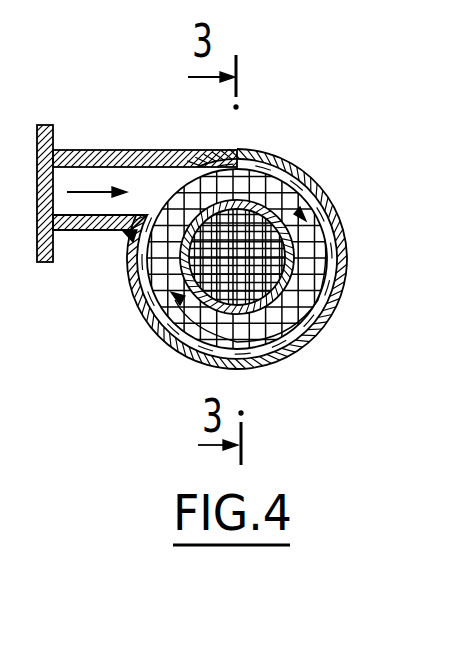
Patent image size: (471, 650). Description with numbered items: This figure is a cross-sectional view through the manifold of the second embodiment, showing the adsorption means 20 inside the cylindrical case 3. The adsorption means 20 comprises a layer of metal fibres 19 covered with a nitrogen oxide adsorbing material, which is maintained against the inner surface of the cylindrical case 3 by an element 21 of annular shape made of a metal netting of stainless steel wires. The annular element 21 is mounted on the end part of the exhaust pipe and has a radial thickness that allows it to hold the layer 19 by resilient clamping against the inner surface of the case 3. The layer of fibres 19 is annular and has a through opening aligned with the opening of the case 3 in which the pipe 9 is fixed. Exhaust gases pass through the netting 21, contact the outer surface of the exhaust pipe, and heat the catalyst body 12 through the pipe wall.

The cylindrical case 3 is at (308, 180).
The pipe 9 is at (88, 228).
The catalyst body 12 is at (299, 257).
The layer of metal fibres 19 is at (342, 282).
The adsorption means 20 is at (346, 214).
The annular element of metal netting 21 is at (313, 320).